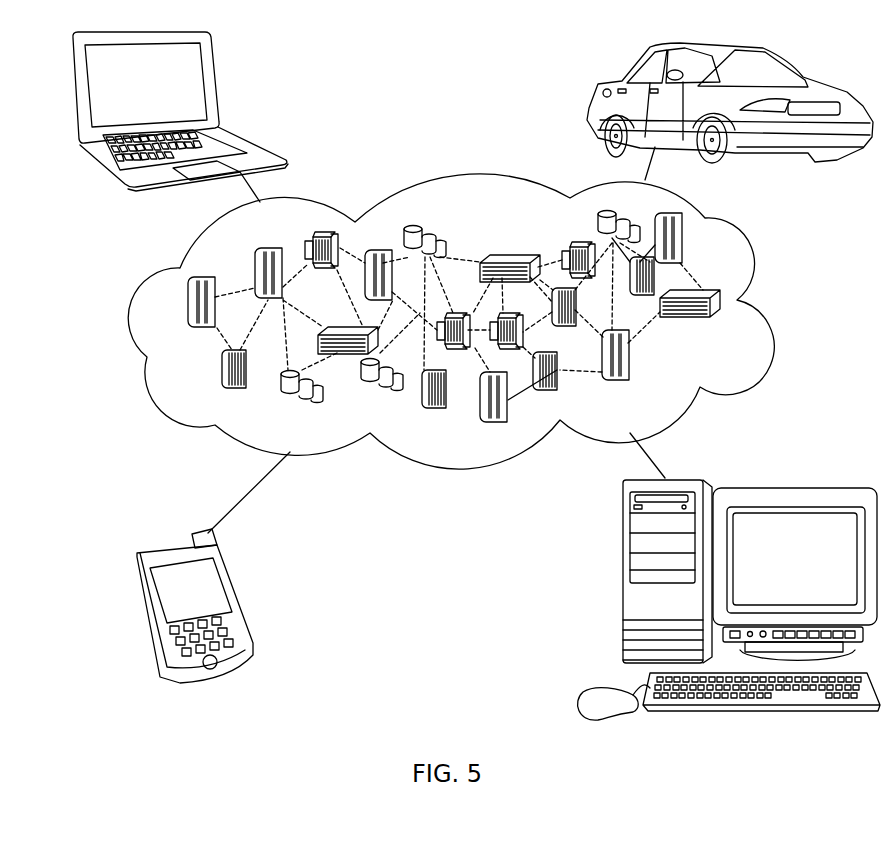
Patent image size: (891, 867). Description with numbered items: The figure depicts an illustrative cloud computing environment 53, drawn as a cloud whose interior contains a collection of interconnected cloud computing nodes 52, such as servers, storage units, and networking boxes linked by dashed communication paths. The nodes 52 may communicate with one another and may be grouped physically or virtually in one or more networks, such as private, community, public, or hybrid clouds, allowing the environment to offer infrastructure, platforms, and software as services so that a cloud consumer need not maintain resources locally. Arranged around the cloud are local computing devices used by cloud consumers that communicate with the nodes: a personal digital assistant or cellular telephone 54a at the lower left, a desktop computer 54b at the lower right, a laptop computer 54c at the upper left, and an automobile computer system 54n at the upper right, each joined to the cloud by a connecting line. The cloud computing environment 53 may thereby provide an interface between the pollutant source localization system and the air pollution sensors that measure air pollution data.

The cloud computing nodes 52 is at (733, 322).
The cloud computing environment 53 is at (737, 302).
The personal digital assistant or cellular telephone 54a is at (238, 585).
The desktop computer 54b is at (623, 583).
The laptop computer 54c is at (217, 77).
The automobile computer system 54n is at (600, 84).